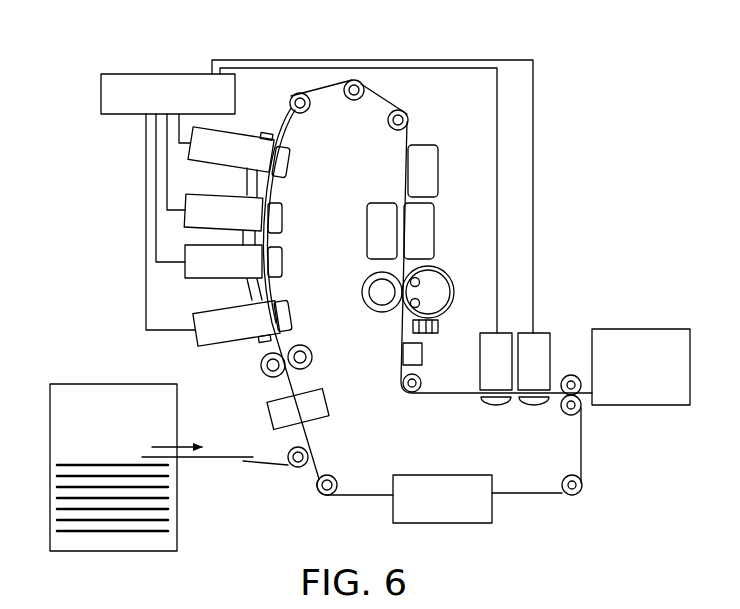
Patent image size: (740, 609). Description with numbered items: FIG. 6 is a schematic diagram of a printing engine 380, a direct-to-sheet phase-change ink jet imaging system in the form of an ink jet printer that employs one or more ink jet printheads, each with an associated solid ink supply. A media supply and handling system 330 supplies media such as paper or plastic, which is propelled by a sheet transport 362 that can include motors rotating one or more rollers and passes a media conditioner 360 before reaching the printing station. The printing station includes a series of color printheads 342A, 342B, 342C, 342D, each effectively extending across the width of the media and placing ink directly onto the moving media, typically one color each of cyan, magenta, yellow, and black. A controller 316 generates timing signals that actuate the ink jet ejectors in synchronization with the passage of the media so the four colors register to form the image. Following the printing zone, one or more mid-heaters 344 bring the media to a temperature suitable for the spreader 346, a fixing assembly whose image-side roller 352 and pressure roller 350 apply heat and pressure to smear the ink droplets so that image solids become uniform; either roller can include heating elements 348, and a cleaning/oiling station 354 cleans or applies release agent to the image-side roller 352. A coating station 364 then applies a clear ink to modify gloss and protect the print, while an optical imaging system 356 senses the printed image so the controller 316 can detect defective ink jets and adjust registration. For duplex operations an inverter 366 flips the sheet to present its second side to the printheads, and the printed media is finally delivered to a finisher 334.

The controller 316 is at (160, 74).
The media supply and handling system 330 is at (85, 384).
The finisher 334 is at (638, 329).
The printhead 342A is at (198, 340).
The printhead 342B is at (185, 280).
The printhead 342C is at (185, 229).
The printhead 342D is at (190, 145).
The mid-heater 344 is at (367, 222).
The spreader 346 is at (457, 259).
The heating elements 348 is at (420, 303).
The pressure roller 350 is at (360, 307).
The image-side roller 352 is at (461, 306).
The cleaning/oiling station 354 is at (430, 334).
The optical imaging system 356 is at (405, 356).
The media conditioner 360 is at (270, 412).
The sheet transport 362 is at (393, 375).
The coating station 364 is at (549, 324).
The inverter 366 is at (492, 506).
The printing engine 380 is at (108, 216).